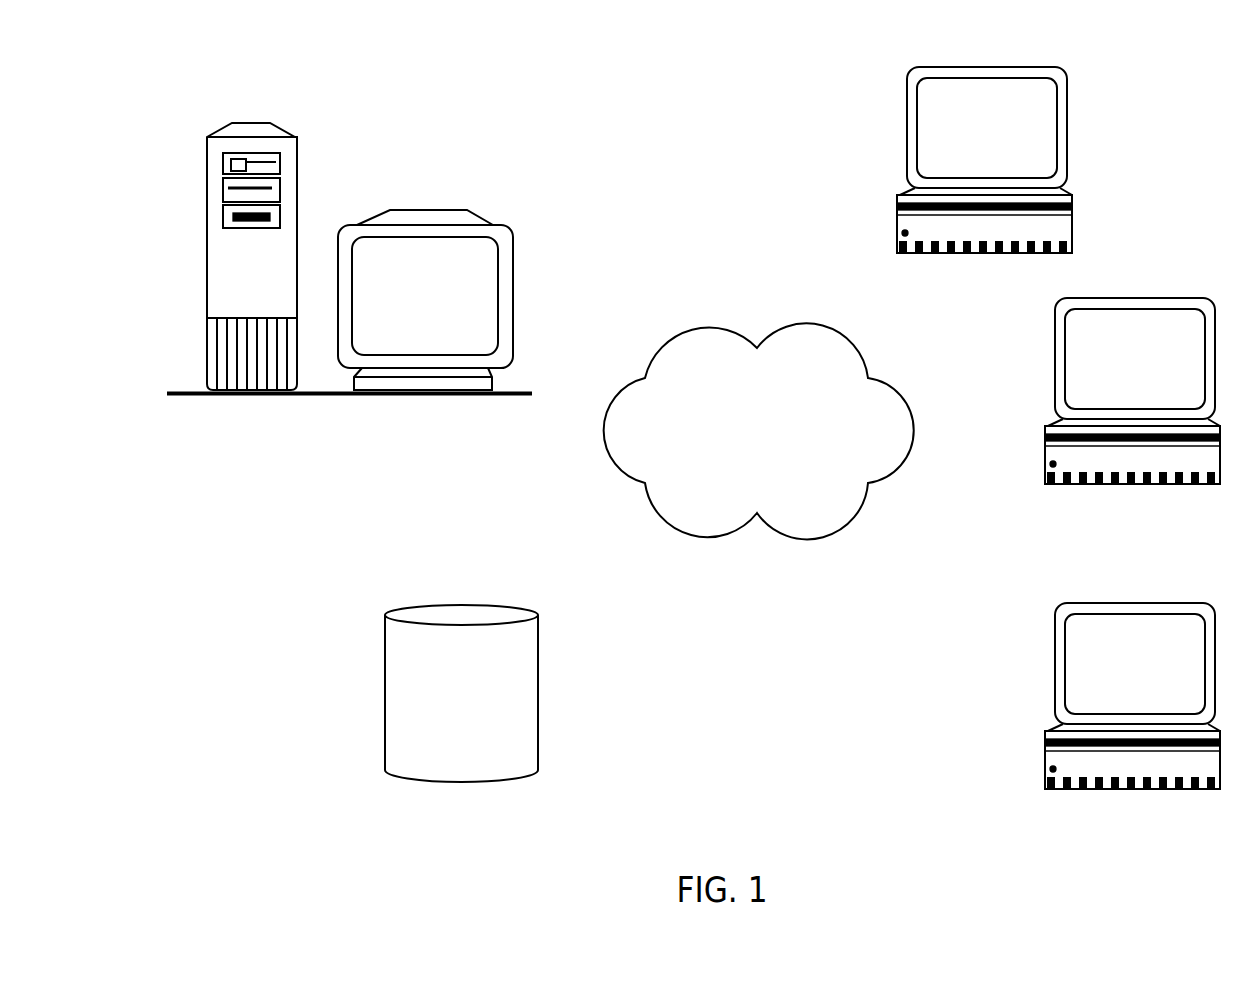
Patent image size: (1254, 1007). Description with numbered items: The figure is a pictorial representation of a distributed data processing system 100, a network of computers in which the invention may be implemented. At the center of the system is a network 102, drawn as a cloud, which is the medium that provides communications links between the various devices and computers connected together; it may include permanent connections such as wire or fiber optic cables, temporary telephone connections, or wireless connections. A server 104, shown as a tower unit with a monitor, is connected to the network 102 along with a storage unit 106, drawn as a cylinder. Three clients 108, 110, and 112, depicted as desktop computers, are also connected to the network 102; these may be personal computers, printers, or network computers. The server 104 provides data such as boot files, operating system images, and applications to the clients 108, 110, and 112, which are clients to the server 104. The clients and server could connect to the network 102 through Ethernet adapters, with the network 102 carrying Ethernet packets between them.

The distributed data processing system 100 is at (600, 32).
The network 102 is at (742, 458).
The server 104 is at (615, 390).
The storage unit 106 is at (685, 526).
The client 108 is at (737, 328).
The client 110 is at (910, 408).
The client 112 is at (838, 522).